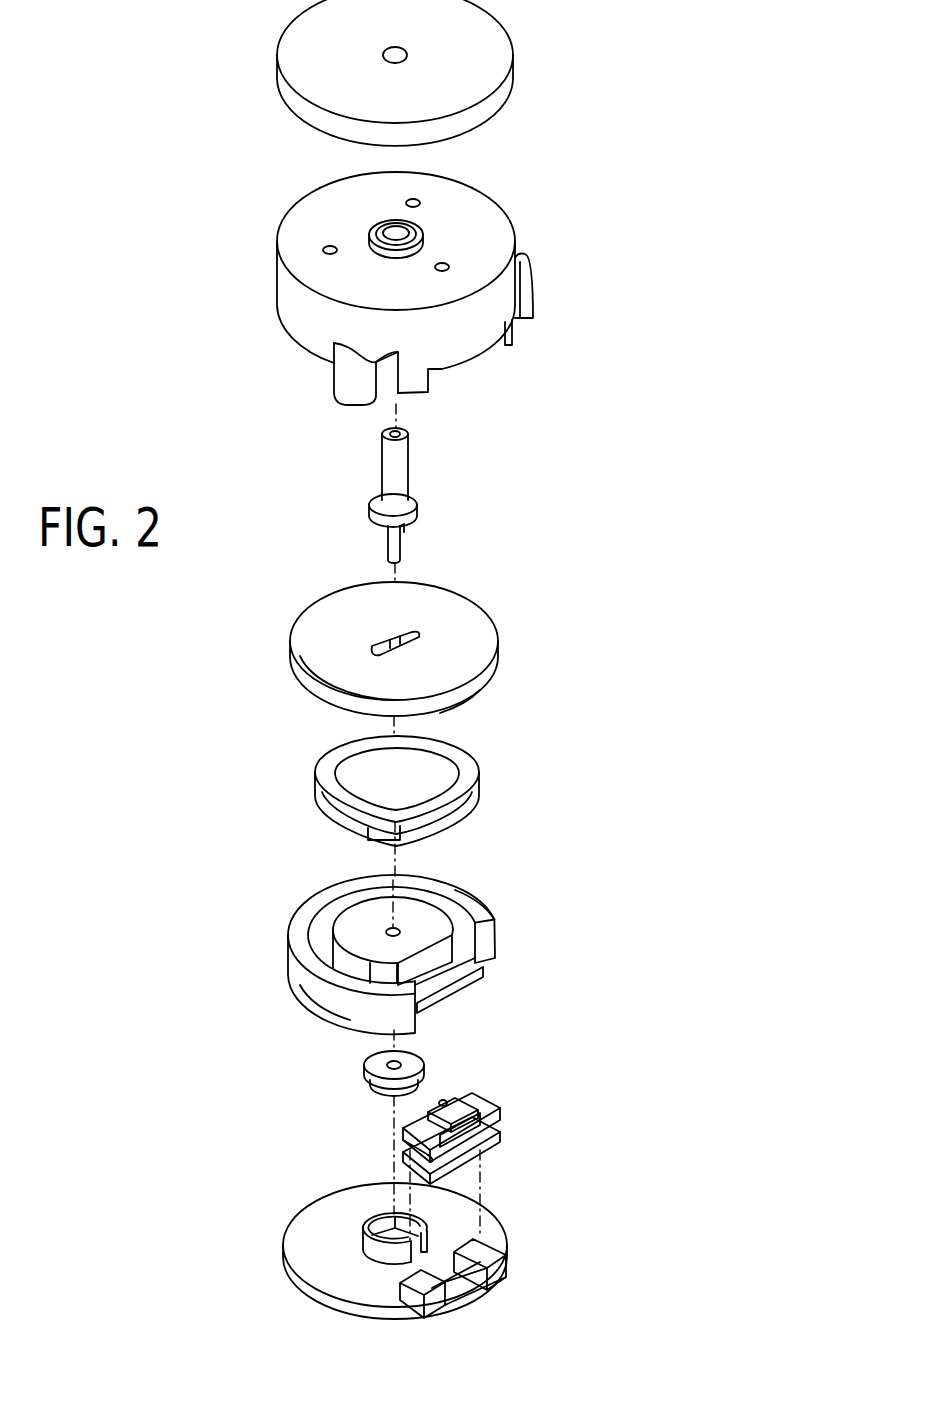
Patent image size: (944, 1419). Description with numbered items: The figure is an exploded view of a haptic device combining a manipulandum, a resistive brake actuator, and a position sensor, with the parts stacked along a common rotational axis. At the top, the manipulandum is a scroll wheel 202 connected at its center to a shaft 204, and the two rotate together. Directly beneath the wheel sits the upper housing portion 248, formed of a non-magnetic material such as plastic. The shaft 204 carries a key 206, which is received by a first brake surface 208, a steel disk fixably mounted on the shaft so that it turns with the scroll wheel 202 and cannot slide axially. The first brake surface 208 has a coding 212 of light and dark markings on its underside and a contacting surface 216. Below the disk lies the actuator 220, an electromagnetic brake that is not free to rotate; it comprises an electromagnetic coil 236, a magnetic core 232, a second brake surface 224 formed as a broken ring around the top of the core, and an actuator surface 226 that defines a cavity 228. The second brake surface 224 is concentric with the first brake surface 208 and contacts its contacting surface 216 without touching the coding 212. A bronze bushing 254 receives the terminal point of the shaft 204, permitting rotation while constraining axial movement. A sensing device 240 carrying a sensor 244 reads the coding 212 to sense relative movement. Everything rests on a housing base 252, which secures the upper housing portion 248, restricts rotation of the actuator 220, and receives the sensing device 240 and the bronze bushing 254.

The scroll wheel 202 is at (497, 50).
The upper housing portion 248 is at (290, 308).
The shaft 204 is at (381, 462).
The key 206 is at (410, 535).
The first brake surface 208 is at (456, 612).
The coding 212 is at (318, 711).
The contacting surface 216 is at (490, 699).
The electromagnetic coil 236 is at (491, 798).
The actuator 220 is at (396, 936).
The second brake surface 224 is at (490, 923).
The actuator surface 226 is at (476, 988).
The cavity 228 is at (459, 998).
The magnetic core 232 is at (306, 985).
The bronze bushing 254 is at (376, 1063).
The sensor 244 is at (447, 1105).
The sensing device 240 is at (488, 1109).
The housing base 252 is at (300, 1244).